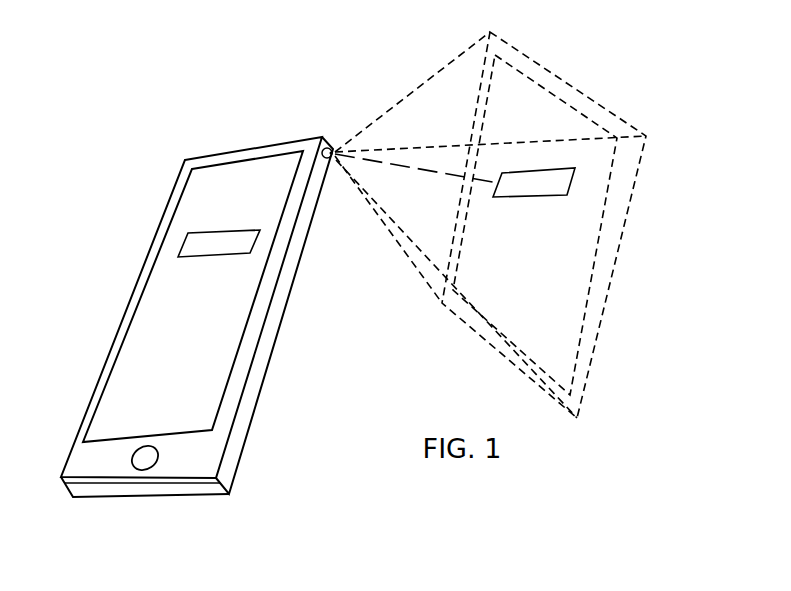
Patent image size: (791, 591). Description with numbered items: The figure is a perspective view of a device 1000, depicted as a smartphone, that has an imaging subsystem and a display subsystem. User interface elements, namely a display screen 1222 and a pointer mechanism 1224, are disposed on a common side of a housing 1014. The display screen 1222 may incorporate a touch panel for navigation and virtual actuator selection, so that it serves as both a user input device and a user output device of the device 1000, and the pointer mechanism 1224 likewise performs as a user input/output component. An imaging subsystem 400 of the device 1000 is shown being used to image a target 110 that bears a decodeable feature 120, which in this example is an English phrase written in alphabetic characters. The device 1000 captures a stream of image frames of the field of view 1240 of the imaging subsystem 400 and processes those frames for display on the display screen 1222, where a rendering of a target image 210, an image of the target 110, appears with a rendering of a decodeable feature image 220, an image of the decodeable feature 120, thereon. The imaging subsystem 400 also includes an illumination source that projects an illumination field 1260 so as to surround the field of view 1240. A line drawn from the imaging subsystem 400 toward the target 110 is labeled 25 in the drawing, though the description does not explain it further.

The device 1000 is at (205, 310).
The housing 1014 is at (181, 296).
The display screen 1222 is at (187, 317).
The pointer mechanism 1224 is at (165, 494).
The imaging subsystem 400 is at (333, 119).
The projection axis 25 is at (414, 209).
The target image 210 is at (273, 303).
The decodeable feature image 220 is at (273, 275).
The target 110 is at (542, 215).
The decodeable feature 120 is at (542, 205).
The field of view 1240 is at (548, 226).
The illumination field 1260 is at (553, 225).